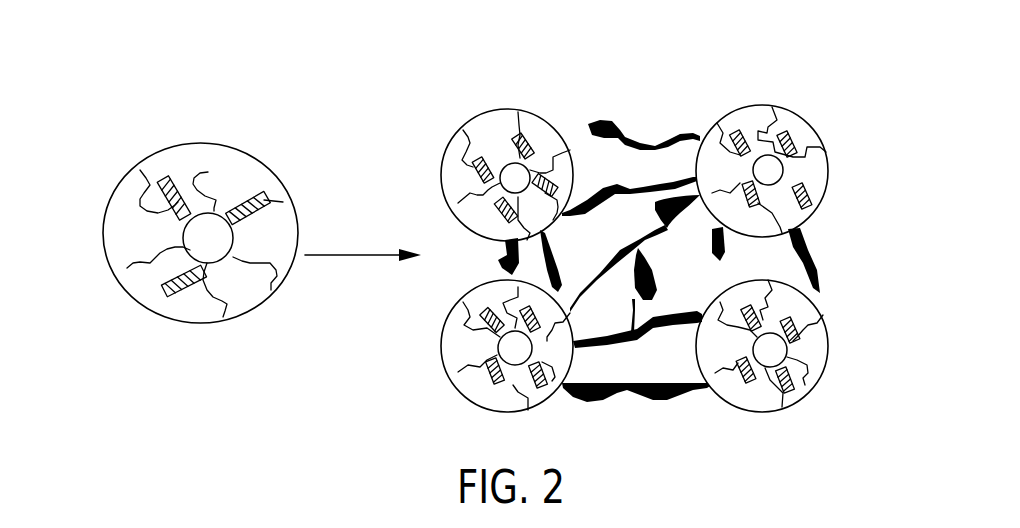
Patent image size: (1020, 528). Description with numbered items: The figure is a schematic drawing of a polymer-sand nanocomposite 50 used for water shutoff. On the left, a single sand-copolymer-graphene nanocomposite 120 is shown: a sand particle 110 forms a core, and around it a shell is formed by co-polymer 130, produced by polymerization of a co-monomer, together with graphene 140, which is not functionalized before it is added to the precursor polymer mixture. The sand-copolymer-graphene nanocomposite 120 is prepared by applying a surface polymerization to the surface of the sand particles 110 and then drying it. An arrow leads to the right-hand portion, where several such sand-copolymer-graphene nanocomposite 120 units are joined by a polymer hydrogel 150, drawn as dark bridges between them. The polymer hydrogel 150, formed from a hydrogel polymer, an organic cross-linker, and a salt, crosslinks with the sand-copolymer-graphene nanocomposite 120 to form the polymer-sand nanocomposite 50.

The sand-copolymer-graphene nanocomposite 120 is at (168, 98).
The co-polymer 130 is at (208, 172).
The graphene 140 is at (158, 196).
The sand particle 110 is at (208, 243).
The polymer hydrogel 150 is at (618, 130).
The polymer-sand nanocomposite 50 is at (651, 206).